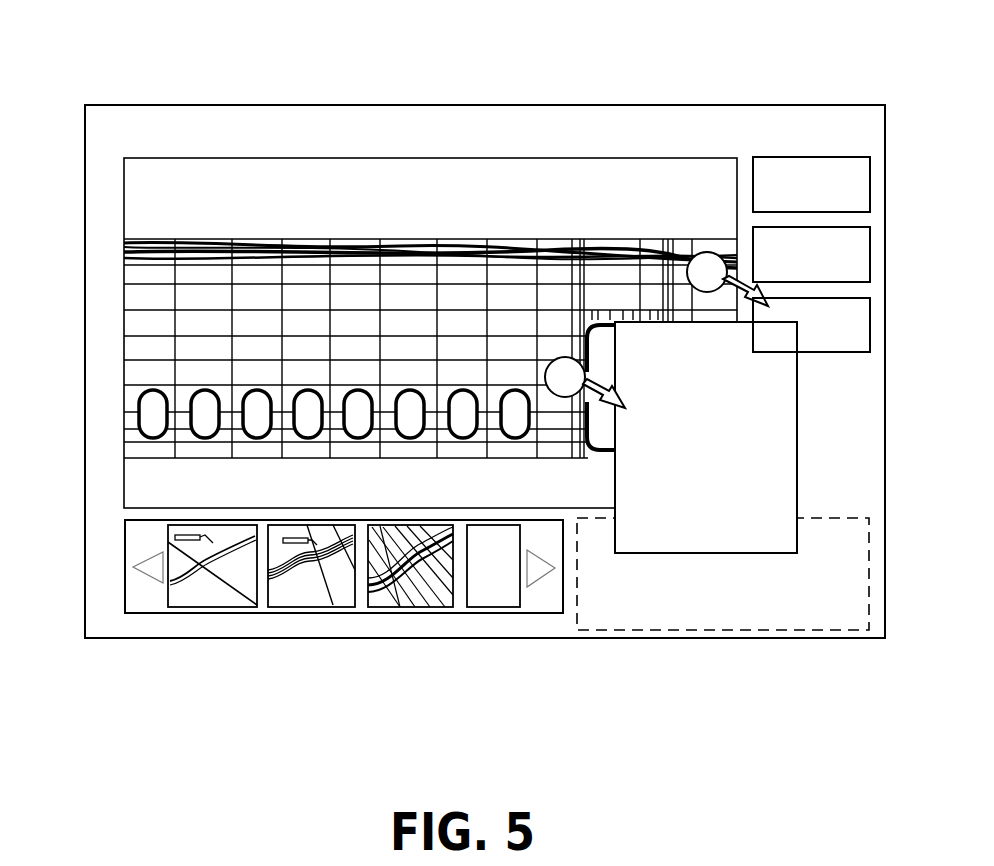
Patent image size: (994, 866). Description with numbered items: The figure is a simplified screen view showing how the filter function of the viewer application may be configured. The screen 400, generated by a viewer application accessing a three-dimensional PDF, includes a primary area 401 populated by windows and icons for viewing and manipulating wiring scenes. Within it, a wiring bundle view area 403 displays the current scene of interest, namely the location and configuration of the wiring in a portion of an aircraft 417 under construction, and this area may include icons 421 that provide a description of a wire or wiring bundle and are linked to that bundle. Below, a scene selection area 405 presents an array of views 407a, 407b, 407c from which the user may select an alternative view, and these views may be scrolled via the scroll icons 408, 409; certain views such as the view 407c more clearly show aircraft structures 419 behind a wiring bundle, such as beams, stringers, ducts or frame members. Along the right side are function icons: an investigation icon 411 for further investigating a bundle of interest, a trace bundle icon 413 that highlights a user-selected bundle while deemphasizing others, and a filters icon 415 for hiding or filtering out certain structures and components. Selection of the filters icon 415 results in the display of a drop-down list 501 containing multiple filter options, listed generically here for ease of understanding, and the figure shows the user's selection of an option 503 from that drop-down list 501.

The screen 400 is at (566, 51).
The primary area 401 is at (142, 144).
The wiring bundle view area 403 is at (187, 189).
The scene selection area 405 is at (152, 614).
The view 407a is at (156, 581).
The view 407b is at (313, 603).
The view 407c is at (412, 607).
The scroll icon 408 is at (153, 567).
The scroll icon 409 is at (535, 567).
The investigation icon 411 is at (832, 196).
The trace bundle icon 413 is at (832, 266).
The filters icon 415 is at (832, 336).
The aircraft 417 is at (352, 458).
The aircraft structures 419 is at (442, 595).
The icons 421 is at (287, 540).
The drop-down list 501 is at (774, 437).
The option 503 is at (783, 410).